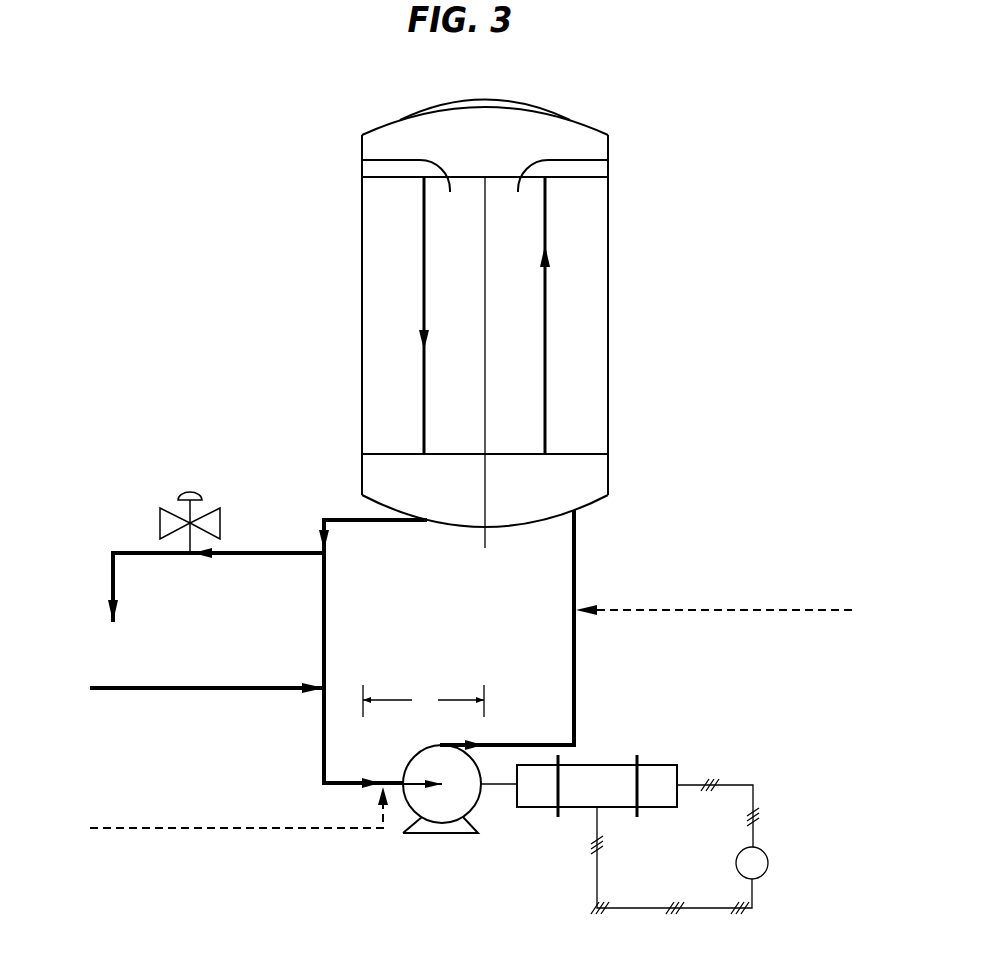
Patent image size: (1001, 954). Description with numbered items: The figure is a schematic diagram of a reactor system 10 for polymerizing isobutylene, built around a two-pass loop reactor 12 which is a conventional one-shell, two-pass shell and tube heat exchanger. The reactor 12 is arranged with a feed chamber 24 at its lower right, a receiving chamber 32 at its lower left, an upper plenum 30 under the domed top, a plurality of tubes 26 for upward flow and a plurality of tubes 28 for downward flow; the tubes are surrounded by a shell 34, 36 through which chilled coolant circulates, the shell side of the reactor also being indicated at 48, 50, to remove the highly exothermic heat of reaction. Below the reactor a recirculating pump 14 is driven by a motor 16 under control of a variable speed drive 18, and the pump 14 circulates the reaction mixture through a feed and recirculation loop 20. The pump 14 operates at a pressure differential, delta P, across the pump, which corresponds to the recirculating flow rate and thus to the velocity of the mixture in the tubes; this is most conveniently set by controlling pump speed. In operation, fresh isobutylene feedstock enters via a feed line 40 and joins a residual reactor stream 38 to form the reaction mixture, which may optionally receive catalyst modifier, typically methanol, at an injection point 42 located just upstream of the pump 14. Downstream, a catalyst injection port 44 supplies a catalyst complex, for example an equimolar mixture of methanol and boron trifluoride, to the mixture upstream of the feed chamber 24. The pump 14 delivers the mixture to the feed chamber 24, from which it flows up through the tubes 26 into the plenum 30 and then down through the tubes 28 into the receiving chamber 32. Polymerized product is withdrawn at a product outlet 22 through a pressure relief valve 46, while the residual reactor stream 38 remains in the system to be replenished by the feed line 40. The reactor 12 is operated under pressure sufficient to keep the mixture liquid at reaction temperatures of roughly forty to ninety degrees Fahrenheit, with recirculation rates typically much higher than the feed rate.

The reactor system 10 is at (168, 350).
The two-pass loop reactor 12 is at (615, 295).
The recirculating pump 14 is at (470, 805).
The motor 16 is at (650, 765).
The variable speed drive 18 is at (765, 855).
The feed and recirculation loop 20 is at (592, 552).
The product outlet 22 is at (113, 586).
The feed chamber 24 is at (598, 481).
The tubes for upward flow 26 is at (545, 408).
The tubes for downward flow 28 is at (423, 253).
The upper plenum 30 is at (527, 116).
The receiving chamber 32 is at (370, 482).
The shell 34 is at (598, 228).
The shell 36 is at (370, 228).
The residual reactor stream 38 is at (326, 578).
The feed line 40 is at (220, 686).
The modifier injection point 42 is at (262, 830).
The catalyst injection port 44 is at (833, 610).
The pressure relief valve 46 is at (160, 527).
The shell side coolant section 48 is at (608, 160).
The shell side coolant section 50 is at (362, 160).